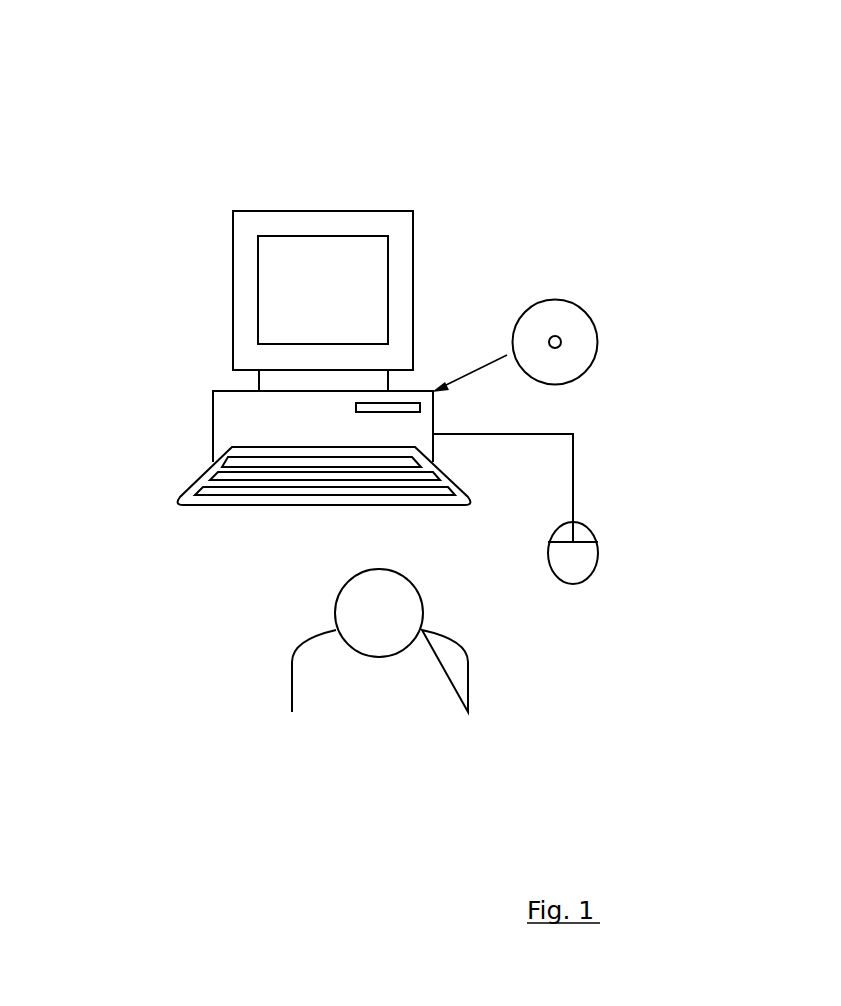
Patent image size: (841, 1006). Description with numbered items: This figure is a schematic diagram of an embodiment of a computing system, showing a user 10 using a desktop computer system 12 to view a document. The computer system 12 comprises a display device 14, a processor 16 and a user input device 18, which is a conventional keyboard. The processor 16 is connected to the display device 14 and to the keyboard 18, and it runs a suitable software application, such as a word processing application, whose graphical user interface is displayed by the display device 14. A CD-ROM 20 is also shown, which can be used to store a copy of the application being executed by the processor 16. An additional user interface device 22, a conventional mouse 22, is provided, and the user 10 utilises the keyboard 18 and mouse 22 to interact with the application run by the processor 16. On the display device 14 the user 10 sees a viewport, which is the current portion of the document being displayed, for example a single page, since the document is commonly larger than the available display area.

The user 10 is at (292, 682).
The desktop computer system 12 is at (130, 92).
The display device 14 is at (413, 234).
The processor 16 is at (213, 411).
The user input device 18 is at (175, 497).
The CD-ROM 20 is at (598, 337).
The mouse 22 is at (598, 555).